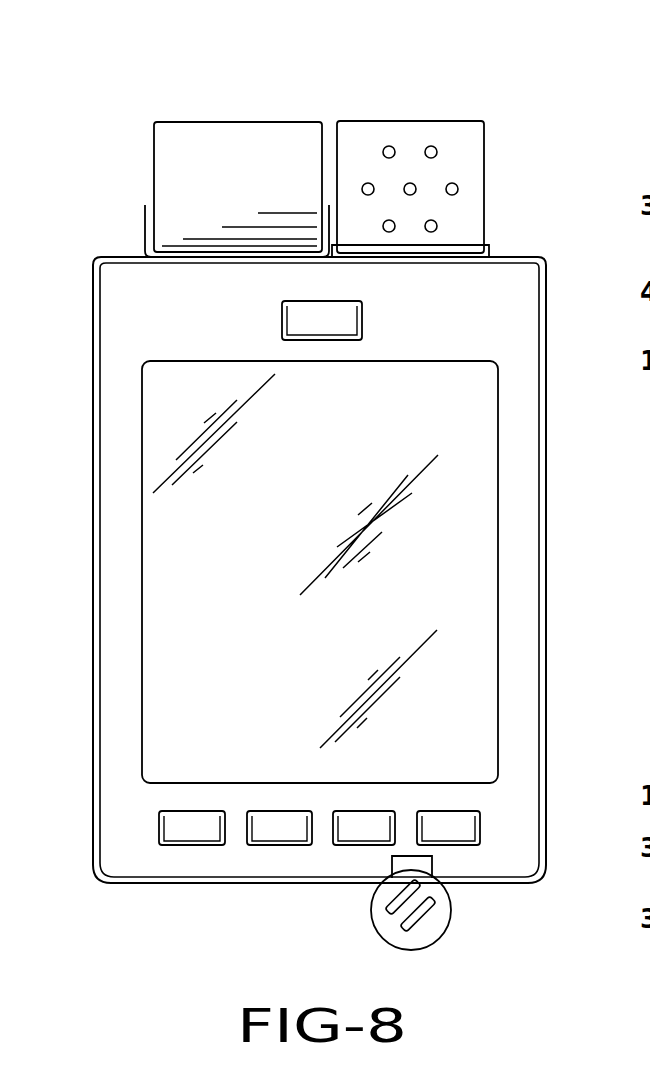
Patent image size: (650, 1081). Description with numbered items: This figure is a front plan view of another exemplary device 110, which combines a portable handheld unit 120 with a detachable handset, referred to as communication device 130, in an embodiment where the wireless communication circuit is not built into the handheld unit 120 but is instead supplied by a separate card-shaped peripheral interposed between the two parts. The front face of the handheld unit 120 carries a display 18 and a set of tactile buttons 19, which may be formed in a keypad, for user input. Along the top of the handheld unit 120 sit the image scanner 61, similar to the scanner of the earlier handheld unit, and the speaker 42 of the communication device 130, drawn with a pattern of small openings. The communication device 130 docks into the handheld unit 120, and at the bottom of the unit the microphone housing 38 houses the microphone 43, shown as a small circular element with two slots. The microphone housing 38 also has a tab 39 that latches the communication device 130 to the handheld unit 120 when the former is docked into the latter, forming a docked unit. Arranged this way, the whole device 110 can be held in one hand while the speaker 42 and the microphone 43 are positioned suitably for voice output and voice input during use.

The device 110 is at (95, 128).
The handheld unit 120 is at (148, 888).
The communication device 130 is at (471, 116).
The image scanner 61 is at (234, 153).
The speaker 42 is at (428, 150).
The display 18 is at (447, 393).
The tactile buttons 19 is at (300, 320).
The microphone housing 38 is at (430, 927).
The tab 39 is at (398, 863).
The microphone 43 is at (390, 912).